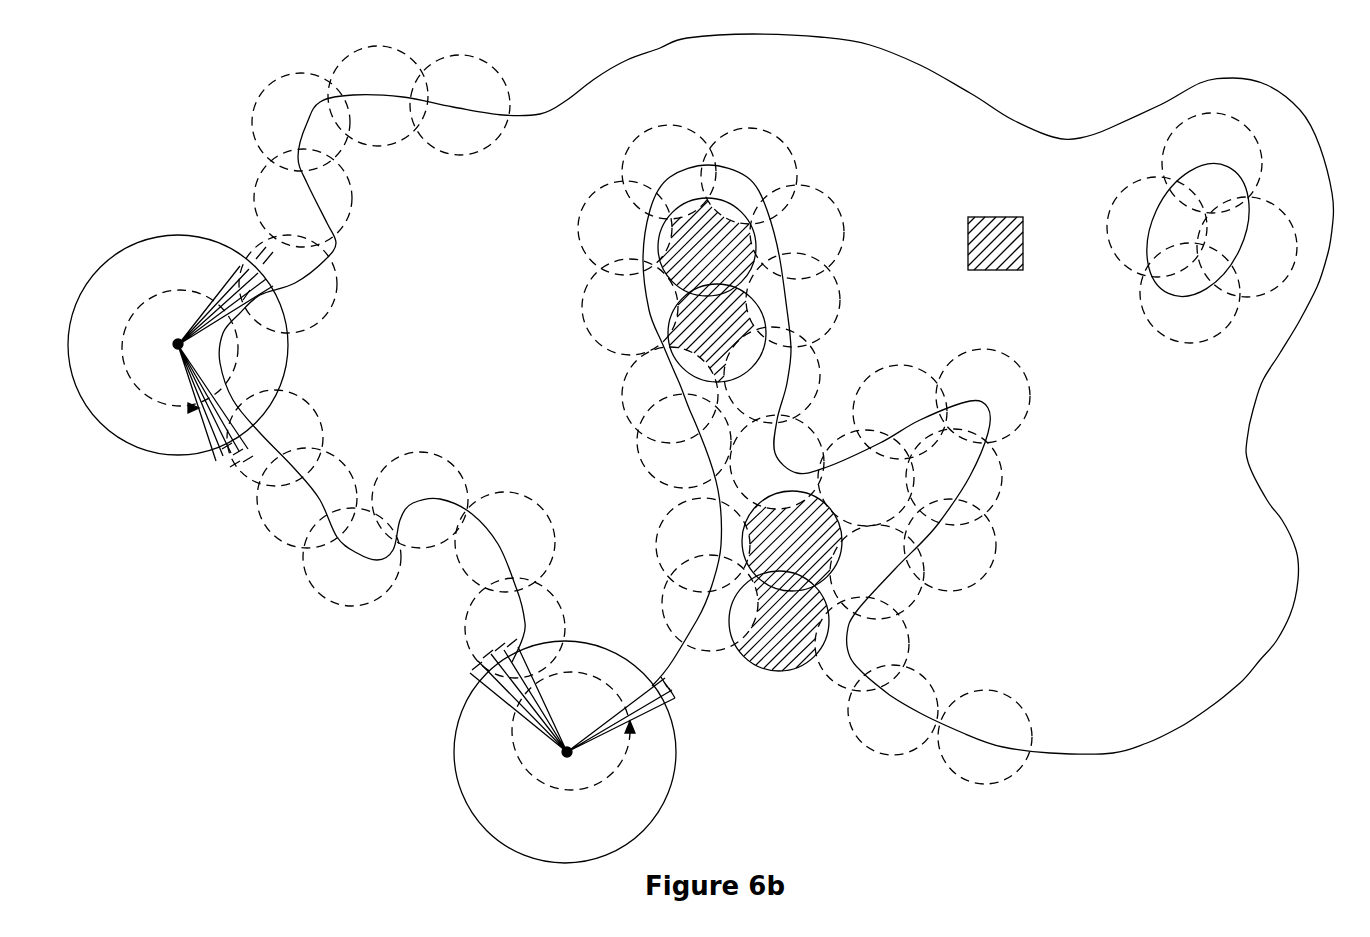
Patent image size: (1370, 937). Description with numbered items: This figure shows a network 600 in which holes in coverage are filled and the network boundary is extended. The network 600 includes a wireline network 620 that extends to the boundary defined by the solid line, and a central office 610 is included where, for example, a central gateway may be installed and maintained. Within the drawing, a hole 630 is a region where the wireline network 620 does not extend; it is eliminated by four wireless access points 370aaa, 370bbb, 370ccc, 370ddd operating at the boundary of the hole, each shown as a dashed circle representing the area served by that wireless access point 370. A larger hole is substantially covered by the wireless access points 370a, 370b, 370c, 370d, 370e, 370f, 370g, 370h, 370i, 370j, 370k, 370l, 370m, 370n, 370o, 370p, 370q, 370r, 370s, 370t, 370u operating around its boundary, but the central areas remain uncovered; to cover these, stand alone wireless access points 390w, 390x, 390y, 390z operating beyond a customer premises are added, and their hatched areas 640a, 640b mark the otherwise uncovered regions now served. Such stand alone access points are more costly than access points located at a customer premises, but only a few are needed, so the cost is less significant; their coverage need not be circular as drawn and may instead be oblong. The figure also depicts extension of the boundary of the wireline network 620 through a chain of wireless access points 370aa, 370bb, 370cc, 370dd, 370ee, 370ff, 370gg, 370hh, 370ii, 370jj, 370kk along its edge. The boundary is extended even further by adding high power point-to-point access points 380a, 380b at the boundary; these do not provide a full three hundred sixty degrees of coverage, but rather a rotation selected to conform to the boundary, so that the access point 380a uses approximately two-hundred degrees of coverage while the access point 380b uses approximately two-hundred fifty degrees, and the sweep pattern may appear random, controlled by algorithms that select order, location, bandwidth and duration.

The network 600 is at (776, 394).
The central office 610 is at (963, 226).
The wireline network 620 is at (815, 93).
The hole 630 is at (1151, 231).
The wireless access point 370 is at (1135, 378).
The wireless access point 370a is at (962, 774).
The wireless access point 370b is at (875, 735).
The wireless access point 370c is at (856, 652).
The wireless access point 370d is at (835, 579).
The wireless access point 370e is at (921, 558).
The wireless access point 370f is at (934, 485).
The wireless access point 370g is at (966, 393).
The wireless access point 370h is at (871, 408).
The wireless access point 370i is at (841, 485).
The wireless access point 370j is at (777, 462).
The wireless access point 370k is at (742, 395).
The wireless access point 370l is at (795, 313).
The wireless access point 370m is at (778, 240).
The wireless access point 370n is at (733, 165).
The wireless access point 370o is at (643, 163).
The wireless access point 370p is at (594, 236).
The wireless access point 370q is at (595, 318).
The wireless access point 370r is at (630, 390).
The wireless access point 370s is at (655, 465).
The wireless access point 370t is at (672, 536).
The wireless access point 370u is at (668, 598).
The wireless access point 370aa is at (441, 99).
The wireless access point 370bb is at (351, 81).
The wireless access point 370cc is at (264, 111).
The wireless access point 370dd is at (270, 220).
The wireless access point 370ee is at (265, 318).
The wireless access point 370ff is at (260, 431).
The wireless access point 370gg is at (264, 515).
The wireless access point 370hh is at (331, 586).
The wireless access point 370ii is at (397, 488).
The wireless access point 370jj is at (506, 545).
The wireless access point 370kk is at (471, 620).
The wireless access point 370aaa is at (1160, 330).
The wireless access point 370bbb is at (1107, 210).
The wireless access point 370ccc is at (1183, 151).
The wireless access point 370ddd is at (1197, 323).
The point-to-point access point 380a is at (84, 356).
The point-to-point access point 380b is at (554, 826).
The stand alone wireless access point 390w is at (775, 698).
The stand alone wireless access point 390x is at (941, 566).
The stand alone wireless access point 390y is at (576, 336).
The stand alone wireless access point 390z is at (587, 207).
The selected access point pair coverage 640a is at (777, 558).
The selected access point pair coverage 640b is at (690, 280).